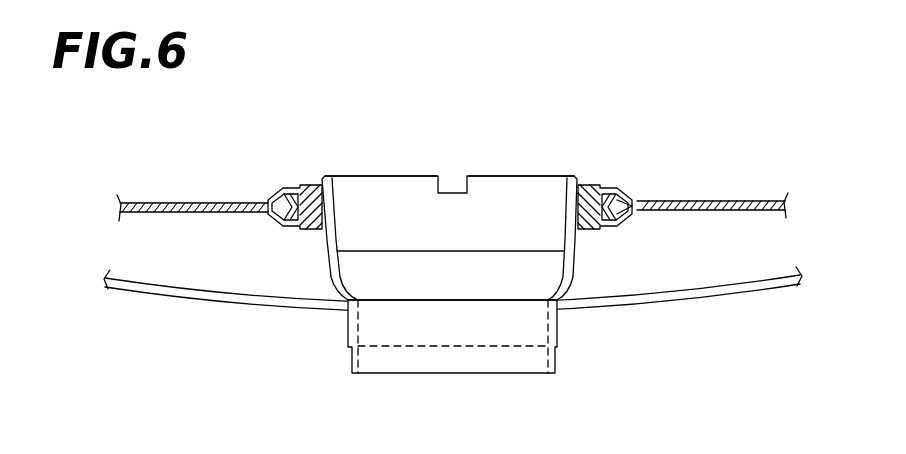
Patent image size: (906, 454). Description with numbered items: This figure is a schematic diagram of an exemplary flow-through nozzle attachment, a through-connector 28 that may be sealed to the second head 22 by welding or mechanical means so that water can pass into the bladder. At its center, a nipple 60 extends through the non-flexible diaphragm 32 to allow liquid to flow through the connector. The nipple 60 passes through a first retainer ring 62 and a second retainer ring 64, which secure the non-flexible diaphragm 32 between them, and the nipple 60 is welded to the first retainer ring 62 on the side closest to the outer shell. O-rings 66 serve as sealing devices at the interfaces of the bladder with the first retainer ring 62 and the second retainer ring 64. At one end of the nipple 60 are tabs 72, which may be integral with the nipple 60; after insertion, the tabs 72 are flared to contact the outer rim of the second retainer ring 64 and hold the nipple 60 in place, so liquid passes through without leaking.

The second head 22 is at (757, 288).
The through-connector 28 is at (478, 136).
The non-flexible diaphragm 32 is at (755, 201).
The nipple 60 is at (533, 327).
The first retainer ring 62 is at (617, 227).
The second retainer ring 64 is at (610, 185).
The o-rings 66 is at (637, 198).
The tabs 72 is at (333, 176).